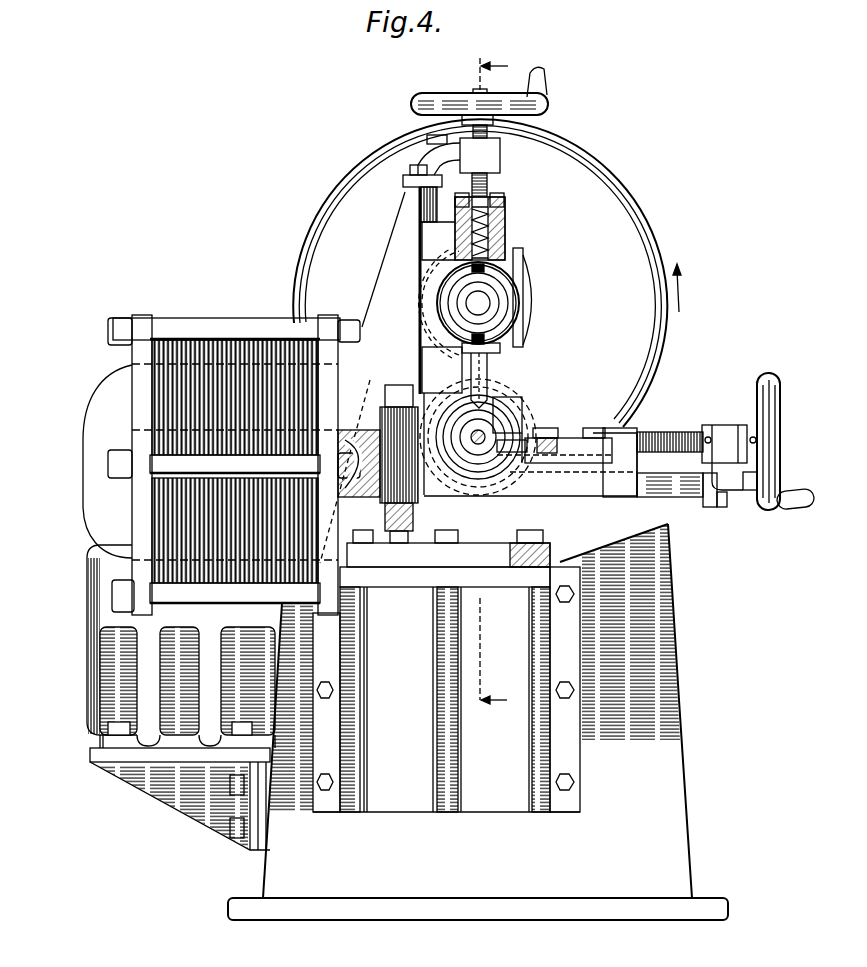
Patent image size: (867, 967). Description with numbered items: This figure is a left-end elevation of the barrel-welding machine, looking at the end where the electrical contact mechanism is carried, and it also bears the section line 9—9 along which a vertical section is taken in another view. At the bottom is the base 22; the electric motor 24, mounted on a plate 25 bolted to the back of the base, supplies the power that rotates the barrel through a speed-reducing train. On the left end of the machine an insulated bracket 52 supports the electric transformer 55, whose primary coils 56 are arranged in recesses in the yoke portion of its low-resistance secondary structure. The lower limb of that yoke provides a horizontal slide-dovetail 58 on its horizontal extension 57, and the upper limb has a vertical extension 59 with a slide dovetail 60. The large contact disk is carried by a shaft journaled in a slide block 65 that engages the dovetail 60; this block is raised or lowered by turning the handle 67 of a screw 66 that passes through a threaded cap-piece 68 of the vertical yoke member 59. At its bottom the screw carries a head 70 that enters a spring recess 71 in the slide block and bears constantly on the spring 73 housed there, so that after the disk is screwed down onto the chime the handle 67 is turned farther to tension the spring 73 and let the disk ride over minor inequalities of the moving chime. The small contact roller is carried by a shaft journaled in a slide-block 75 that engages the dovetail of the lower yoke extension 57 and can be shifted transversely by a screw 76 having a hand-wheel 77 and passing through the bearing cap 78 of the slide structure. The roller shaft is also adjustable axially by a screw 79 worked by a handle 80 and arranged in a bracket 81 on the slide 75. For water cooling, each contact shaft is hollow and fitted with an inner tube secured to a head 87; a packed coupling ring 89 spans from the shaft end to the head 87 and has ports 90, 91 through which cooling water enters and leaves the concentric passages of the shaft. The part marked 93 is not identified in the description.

The section line 9 is at (494, 386).
The base 22 is at (676, 870).
The electric motor 24 is at (90, 705).
The plate 25 is at (178, 790).
The bracket 52 is at (500, 790).
The electric transformer 55 is at (196, 327).
The primary coils 56 is at (357, 432).
The horizontal extension 57 is at (626, 521).
The horizontal slide-dovetail 58 is at (673, 482).
The vertical extension 59 is at (378, 281).
The slide dovetail 60 is at (410, 190).
The slide block 65 is at (524, 270).
The screw 66 is at (488, 186).
The handle 67 is at (548, 107).
The cap-piece 68 is at (501, 158).
The head 70 is at (506, 208).
The spring recess 71 is at (496, 236).
The spring 73 is at (457, 238).
The slide-block 75 is at (573, 483).
The screw 76 is at (668, 433).
The hand-wheel 77 is at (768, 376).
The bearing cap 78 is at (725, 428).
The screw 79 is at (477, 442).
The handle 80 is at (481, 497).
The bracket 81 is at (566, 441).
The head 87 is at (496, 300).
The coupling ring 89 is at (506, 316).
The port 90 is at (470, 268).
The port 91 is at (470, 337).
The shaft 93 is at (498, 365).